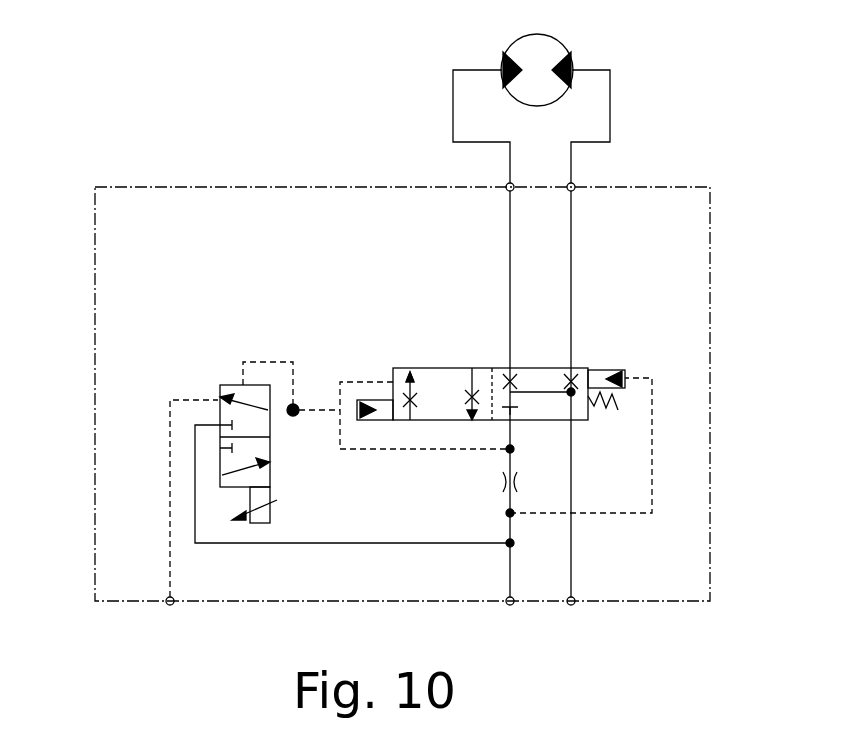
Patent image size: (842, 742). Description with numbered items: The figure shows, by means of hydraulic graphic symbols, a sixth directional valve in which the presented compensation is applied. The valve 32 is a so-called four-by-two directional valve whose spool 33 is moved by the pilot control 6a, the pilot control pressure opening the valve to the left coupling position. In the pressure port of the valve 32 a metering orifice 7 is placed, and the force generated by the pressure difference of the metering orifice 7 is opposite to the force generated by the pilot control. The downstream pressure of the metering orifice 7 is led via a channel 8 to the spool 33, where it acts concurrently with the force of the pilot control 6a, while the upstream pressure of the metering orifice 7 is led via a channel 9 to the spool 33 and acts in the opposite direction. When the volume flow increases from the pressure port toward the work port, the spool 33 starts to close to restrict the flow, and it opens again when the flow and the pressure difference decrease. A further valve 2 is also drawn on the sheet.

The valve 32 is at (195, 186).
The directional control valve 2 is at (160, 446).
The channel 8 is at (378, 378).
The spool 33 is at (428, 412).
The pilot control 6a is at (340, 421).
The metering orifice 7 is at (522, 480).
The channel 9 is at (653, 488).